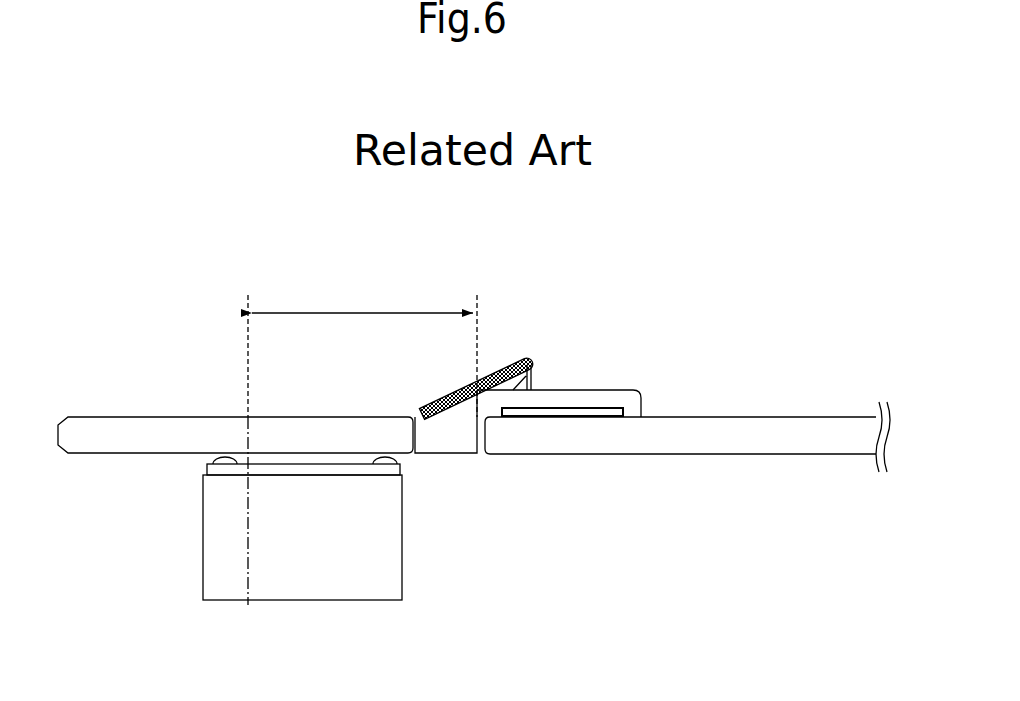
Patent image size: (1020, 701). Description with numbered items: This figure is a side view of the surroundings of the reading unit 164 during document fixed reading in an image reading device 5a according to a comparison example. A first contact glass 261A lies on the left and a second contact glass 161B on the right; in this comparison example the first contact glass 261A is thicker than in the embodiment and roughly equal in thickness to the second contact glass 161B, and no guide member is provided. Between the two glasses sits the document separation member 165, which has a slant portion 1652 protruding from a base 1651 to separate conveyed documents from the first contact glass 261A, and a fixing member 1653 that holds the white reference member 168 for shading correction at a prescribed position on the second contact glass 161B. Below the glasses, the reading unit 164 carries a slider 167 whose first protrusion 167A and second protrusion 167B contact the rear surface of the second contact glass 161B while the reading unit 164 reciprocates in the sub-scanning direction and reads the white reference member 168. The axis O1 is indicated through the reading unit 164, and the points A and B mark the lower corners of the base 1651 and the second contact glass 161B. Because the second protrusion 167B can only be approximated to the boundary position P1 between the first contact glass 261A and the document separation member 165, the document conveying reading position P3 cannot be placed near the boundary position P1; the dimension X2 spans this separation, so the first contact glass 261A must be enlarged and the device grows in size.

The image reading device 5a is at (600, 254).
The first contact glass 261A is at (118, 432).
The second contact glass 161B is at (743, 428).
The document separation member 165 is at (495, 365).
The base 1651 is at (450, 443).
The slant portion 1652 is at (515, 382).
The fixing member 1653 is at (603, 397).
The white reference member 168 is at (585, 417).
The slider 167 is at (197, 463).
The first protrusion 167A is at (205, 469).
The second protrusion 167B is at (388, 462).
The reading unit 164 is at (215, 575).
The rotation axis O1 is at (248, 580).
The boundary position P1 is at (473, 345).
The document conveying reading position P3 is at (246, 345).
The distance X2 is at (362, 299).
The point A is at (410, 456).
The point B is at (482, 457).